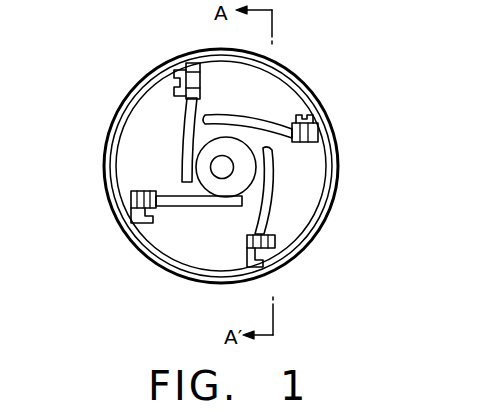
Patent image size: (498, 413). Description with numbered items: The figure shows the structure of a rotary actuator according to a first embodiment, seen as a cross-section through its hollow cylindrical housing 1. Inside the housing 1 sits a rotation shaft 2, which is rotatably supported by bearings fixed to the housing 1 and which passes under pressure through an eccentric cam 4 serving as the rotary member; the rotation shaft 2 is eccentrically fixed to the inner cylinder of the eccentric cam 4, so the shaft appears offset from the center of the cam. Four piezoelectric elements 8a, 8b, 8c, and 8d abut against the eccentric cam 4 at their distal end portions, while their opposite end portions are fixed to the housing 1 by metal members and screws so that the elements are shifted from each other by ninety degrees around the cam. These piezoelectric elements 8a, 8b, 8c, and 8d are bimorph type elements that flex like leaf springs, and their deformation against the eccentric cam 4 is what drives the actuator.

The housing 1 is at (308, 93).
The rotation shaft 2 is at (217, 170).
The eccentric cam 4 is at (225, 187).
The piezoelectric element 8a is at (172, 210).
The piezoelectric element 8b is at (188, 131).
The piezoelectric element 8c is at (280, 136).
The piezoelectric element 8d is at (264, 200).